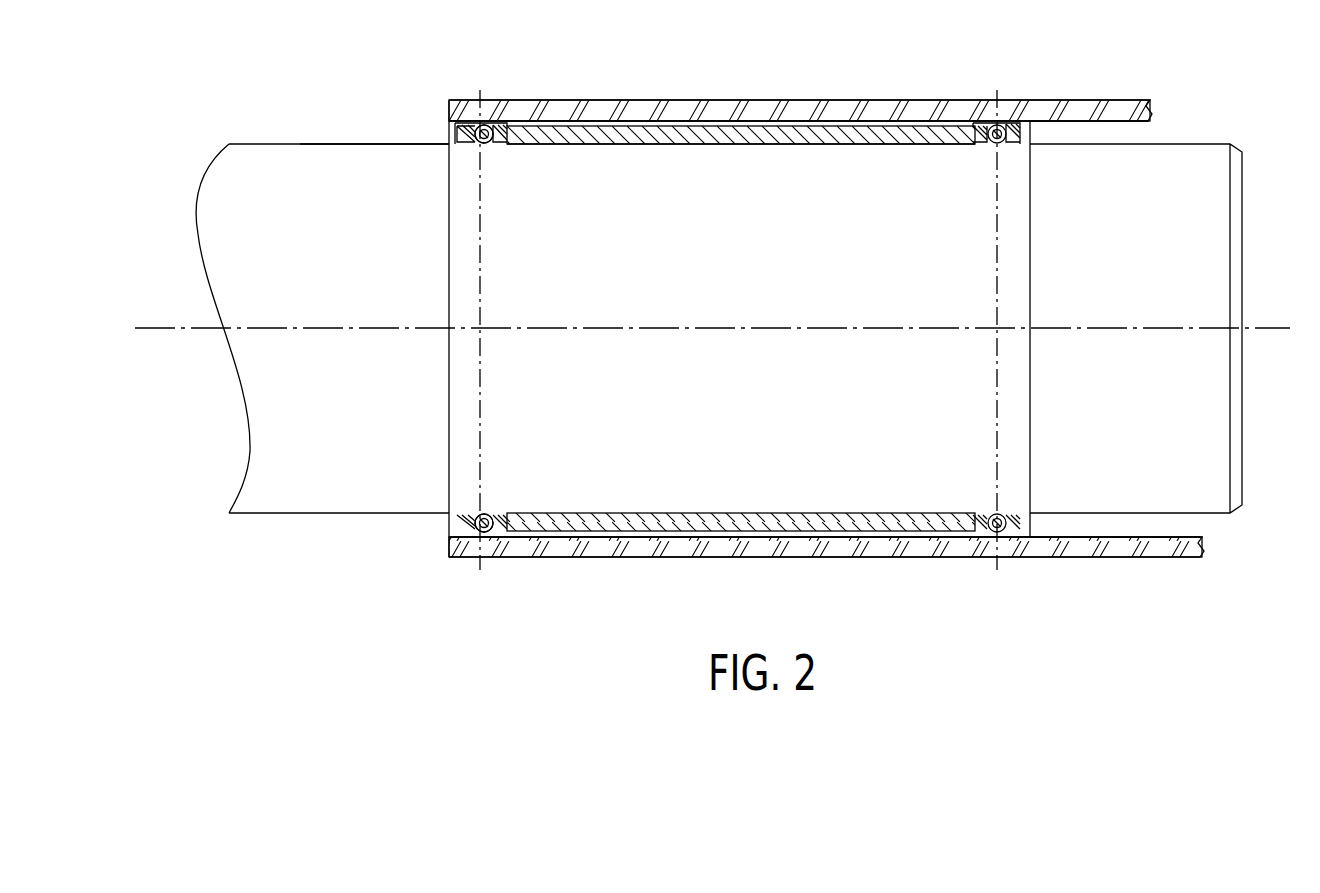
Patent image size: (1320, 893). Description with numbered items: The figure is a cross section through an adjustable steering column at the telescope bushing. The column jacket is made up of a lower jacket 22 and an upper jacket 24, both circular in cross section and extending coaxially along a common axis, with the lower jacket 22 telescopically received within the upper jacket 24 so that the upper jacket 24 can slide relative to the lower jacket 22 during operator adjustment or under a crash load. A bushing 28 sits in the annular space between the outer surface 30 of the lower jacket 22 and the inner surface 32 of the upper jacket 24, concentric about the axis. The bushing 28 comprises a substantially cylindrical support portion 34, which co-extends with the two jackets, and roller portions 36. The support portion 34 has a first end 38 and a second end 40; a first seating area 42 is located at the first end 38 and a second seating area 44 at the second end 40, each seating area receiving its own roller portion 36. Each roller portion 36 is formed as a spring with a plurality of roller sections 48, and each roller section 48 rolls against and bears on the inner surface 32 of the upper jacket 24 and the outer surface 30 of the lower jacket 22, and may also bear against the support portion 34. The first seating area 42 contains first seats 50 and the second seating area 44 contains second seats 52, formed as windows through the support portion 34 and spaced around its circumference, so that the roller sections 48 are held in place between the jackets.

The lower jacket 22 is at (323, 157).
The upper jacket 24 is at (870, 100).
The bushing 28 is at (638, 147).
The outer surface 30 is at (367, 143).
The inner surface 32 is at (740, 120).
The support portion 34 is at (752, 145).
The roller portion 36 is at (489, 126).
The first end 38 is at (467, 138).
The second end 40 is at (1012, 138).
The first seating area 42 is at (500, 138).
The second seating area 44 is at (973, 138).
The roller section 48 is at (486, 143).
The first seat 50 is at (479, 143).
The second seat 52 is at (994, 143).